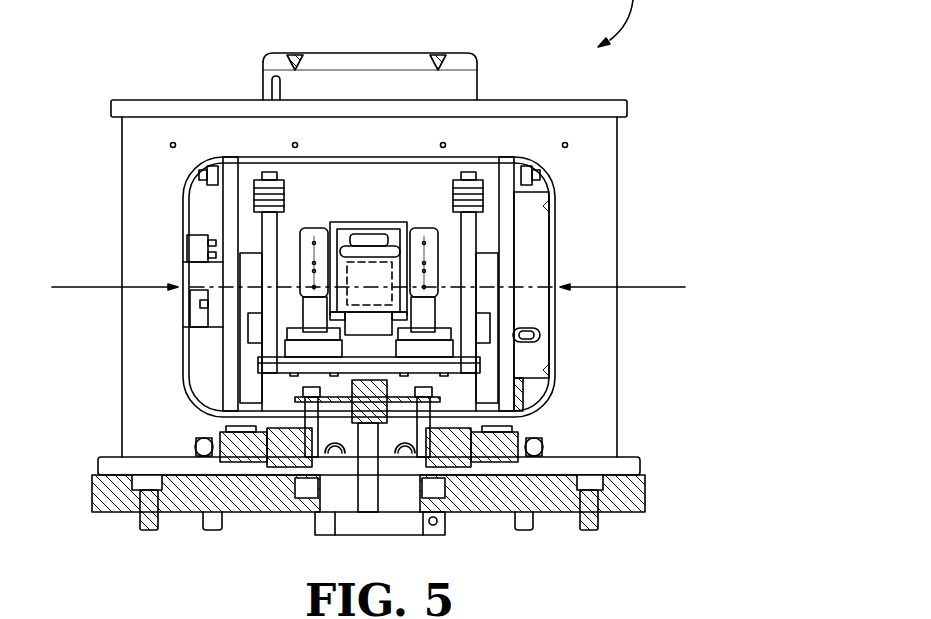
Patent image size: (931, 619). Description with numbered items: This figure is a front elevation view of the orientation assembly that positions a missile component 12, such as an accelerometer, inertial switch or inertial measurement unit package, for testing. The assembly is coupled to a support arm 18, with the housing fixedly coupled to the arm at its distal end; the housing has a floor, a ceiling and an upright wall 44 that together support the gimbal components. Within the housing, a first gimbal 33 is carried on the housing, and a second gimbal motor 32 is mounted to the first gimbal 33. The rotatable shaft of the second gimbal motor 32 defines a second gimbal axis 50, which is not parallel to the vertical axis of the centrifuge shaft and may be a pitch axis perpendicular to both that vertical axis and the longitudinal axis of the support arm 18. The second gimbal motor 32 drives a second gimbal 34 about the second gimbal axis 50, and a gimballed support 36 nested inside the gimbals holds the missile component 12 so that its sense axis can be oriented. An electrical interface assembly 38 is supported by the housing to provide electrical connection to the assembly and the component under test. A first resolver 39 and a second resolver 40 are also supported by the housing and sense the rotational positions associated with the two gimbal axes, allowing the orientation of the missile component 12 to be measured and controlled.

The missile component 12 is at (358, 265).
The support arm 18 is at (650, 520).
The second gimbal motor 32 is at (186, 296).
The first gimbal 33 is at (232, 350).
The second gimbal 34 is at (268, 228).
The gimballed support 36 is at (365, 222).
The electrical interface assembly 38 is at (392, 222).
The first resolver 39 is at (345, 71).
The second resolver 40 is at (530, 222).
The upright wall 44 is at (140, 406).
The second gimbal axis 50 is at (656, 287).